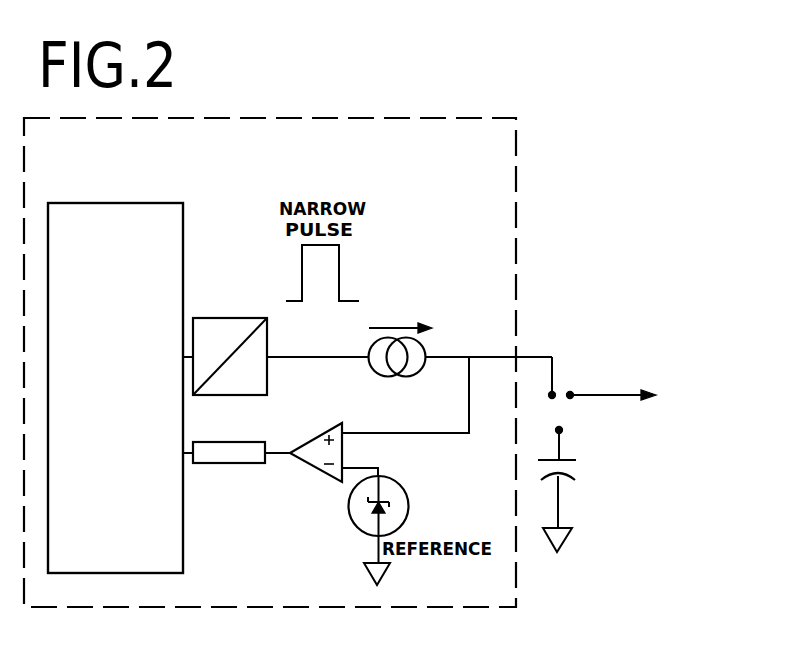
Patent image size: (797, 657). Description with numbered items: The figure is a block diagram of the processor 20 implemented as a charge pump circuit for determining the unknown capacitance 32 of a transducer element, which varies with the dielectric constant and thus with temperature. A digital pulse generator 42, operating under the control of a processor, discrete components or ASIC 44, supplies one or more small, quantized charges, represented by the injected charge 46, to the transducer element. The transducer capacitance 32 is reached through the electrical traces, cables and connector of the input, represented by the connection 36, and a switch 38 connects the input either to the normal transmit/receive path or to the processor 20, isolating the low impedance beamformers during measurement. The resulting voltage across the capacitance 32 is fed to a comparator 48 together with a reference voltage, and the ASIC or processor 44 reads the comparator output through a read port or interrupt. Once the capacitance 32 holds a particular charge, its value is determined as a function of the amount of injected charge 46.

The processor 20 is at (328, 118).
The processor, discrete components or ASIC 44 is at (131, 203).
The digital pulse generator 42 is at (217, 318).
The injected charge 46 is at (394, 316).
The comparator 48 is at (333, 422).
The switch 38 is at (563, 389).
The connection of the input 36 is at (559, 430).
The capacitor 32 is at (578, 473).